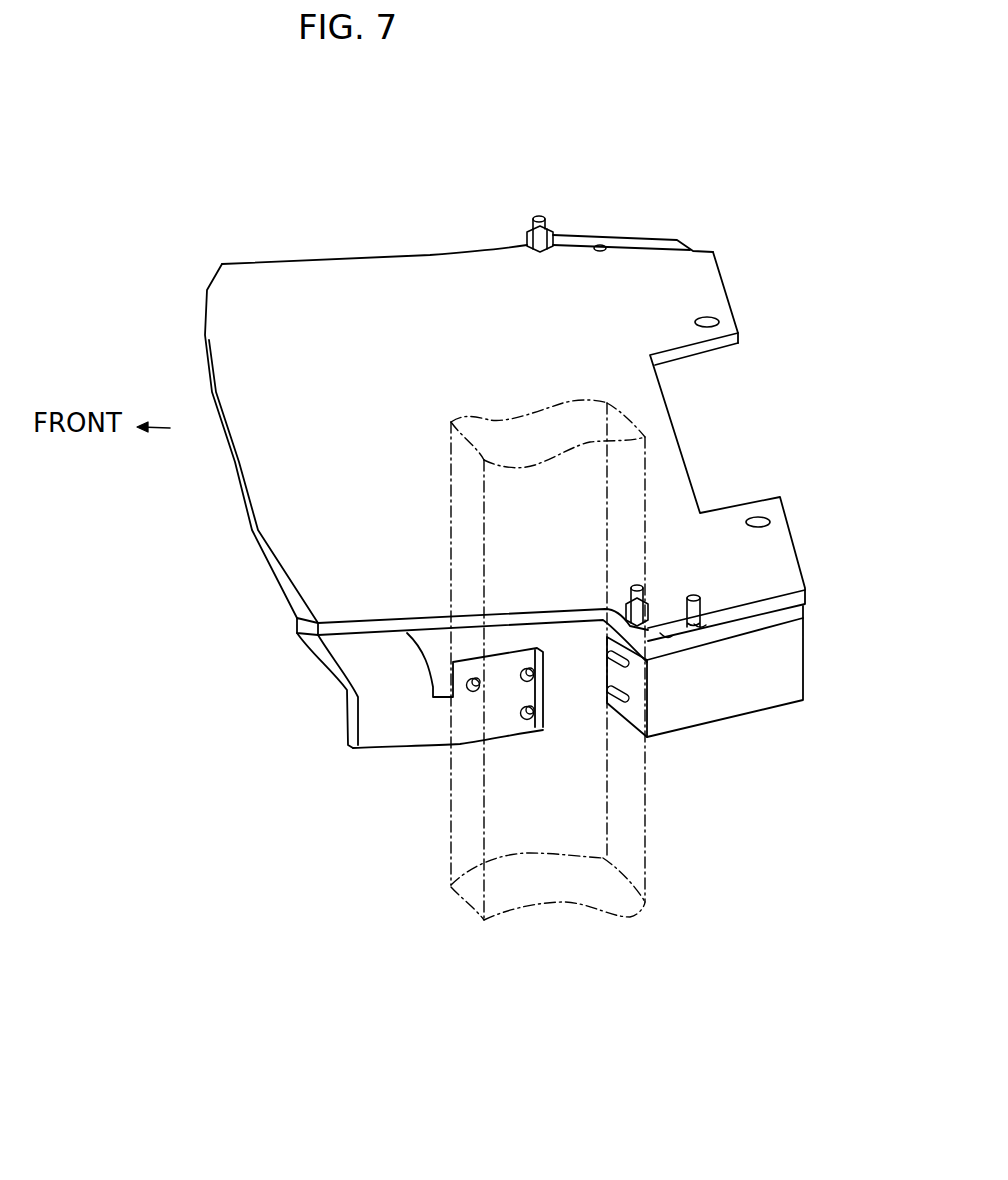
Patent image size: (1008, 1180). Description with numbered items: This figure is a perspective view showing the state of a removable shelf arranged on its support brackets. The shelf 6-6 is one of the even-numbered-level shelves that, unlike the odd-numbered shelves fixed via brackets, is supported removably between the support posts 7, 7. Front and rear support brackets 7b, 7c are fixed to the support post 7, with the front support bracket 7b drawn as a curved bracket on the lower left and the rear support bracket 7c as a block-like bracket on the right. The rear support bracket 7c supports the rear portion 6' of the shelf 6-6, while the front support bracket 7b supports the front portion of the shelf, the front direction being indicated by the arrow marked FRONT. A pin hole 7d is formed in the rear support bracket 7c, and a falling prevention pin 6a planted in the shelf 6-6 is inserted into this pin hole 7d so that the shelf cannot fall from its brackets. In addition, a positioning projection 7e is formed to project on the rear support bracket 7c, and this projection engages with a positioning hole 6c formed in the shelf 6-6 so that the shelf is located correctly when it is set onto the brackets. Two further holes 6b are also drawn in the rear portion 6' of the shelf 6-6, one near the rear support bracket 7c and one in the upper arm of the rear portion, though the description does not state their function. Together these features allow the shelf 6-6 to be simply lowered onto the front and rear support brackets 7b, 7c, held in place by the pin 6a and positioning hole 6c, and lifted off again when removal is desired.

The falling prevention pin 6a is at (538, 220).
The positioning hole 6b is at (757, 517).
The positioning hole 6c is at (600, 247).
The rear portion of shelf 6' is at (755, 424).
The shelf 6-6 is at (270, 452).
The support post 7 is at (530, 892).
The front support bracket 7b is at (373, 693).
The rear support bracket 7c is at (787, 667).
The pin hole 7d is at (667, 633).
The positioning projection 7e is at (700, 627).